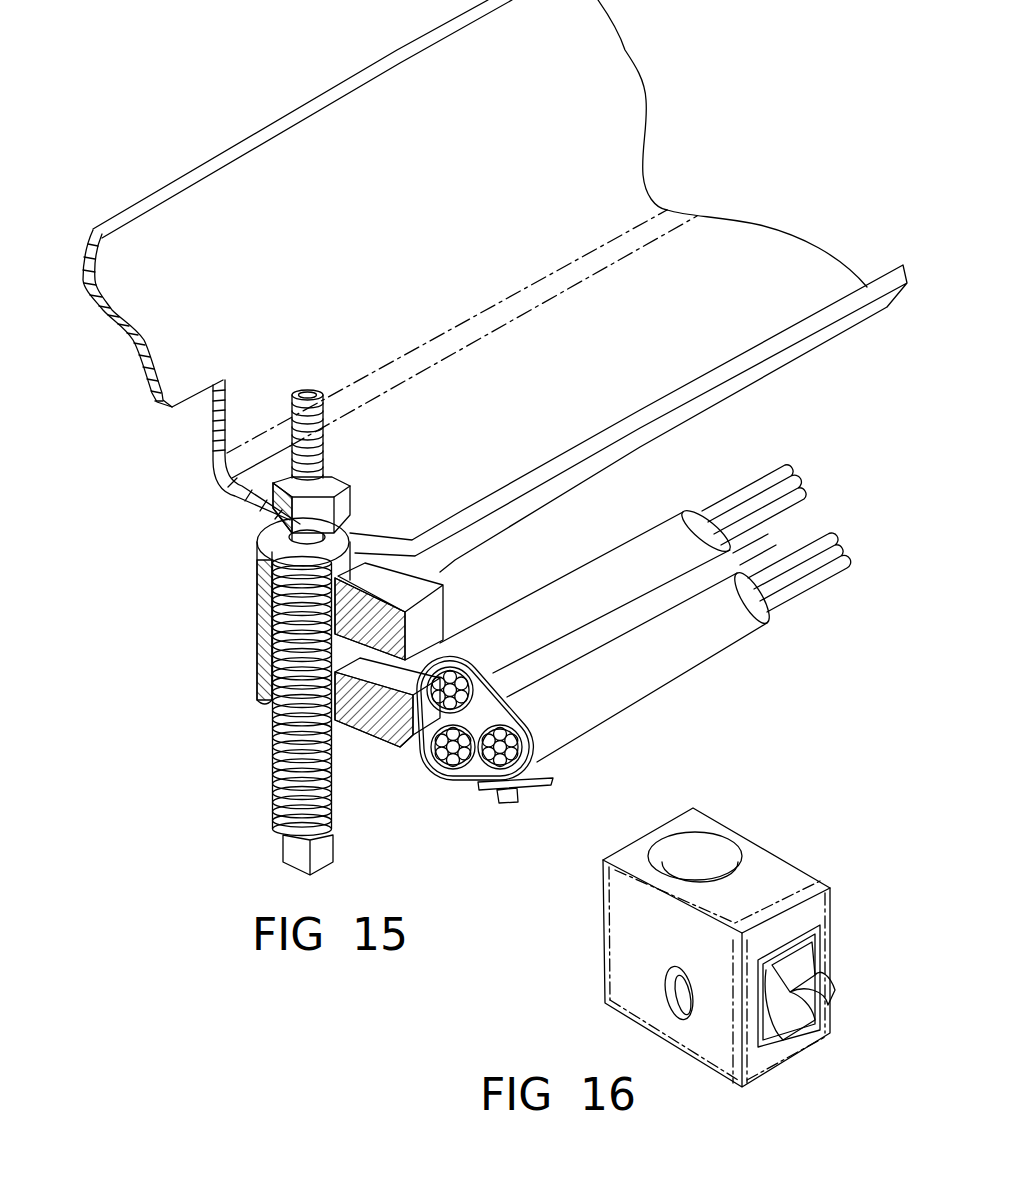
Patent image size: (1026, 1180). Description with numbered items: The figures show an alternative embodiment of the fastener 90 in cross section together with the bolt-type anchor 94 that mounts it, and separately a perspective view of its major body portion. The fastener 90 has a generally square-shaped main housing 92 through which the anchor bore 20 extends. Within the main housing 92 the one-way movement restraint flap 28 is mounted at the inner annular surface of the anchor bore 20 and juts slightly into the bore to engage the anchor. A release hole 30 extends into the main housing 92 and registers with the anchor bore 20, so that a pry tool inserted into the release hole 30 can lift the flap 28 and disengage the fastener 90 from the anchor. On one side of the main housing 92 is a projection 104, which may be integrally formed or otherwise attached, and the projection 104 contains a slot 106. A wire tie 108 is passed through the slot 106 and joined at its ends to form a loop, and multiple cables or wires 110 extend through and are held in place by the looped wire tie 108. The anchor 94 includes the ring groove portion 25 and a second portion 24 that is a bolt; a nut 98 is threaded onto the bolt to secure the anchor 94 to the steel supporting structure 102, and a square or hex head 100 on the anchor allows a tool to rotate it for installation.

In FIG. 15, the steel supporting structure 102 is at (290, 113).
In FIG. 15, the second portion 24 is at (323, 440).
In FIG. 15, the nut 98 is at (352, 487).
In FIG. 15, the main housing 92 is at (257, 580).
In FIG. 16, the main housing 92 is at (754, 922).
In FIG. 15, the anchor 94 is at (273, 783).
In FIG. 15, the ring groove portion 25 is at (273, 741).
In FIG. 15, the square or hex head 100 is at (285, 853).
In FIG. 15, the one-way movement restraint flap 28 is at (374, 735).
In FIG. 15, the release hole 30 is at (344, 735).
In FIG. 15, the wire tie 108 is at (493, 670).
In FIG. 15, the cables or wires 110 is at (630, 560).
In FIG. 15, the fastener 90 is at (259, 634).
In FIG. 16, the fastener 90 is at (754, 920).
In FIG. 16, the anchor bore 20 is at (667, 857).
In FIG. 16, the slot 106 is at (797, 977).
In FIG. 16, the projection 104 is at (830, 993).